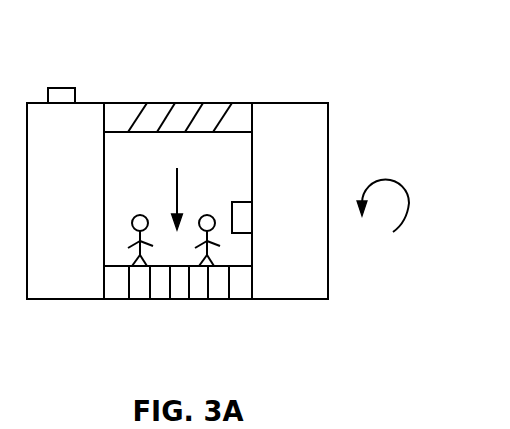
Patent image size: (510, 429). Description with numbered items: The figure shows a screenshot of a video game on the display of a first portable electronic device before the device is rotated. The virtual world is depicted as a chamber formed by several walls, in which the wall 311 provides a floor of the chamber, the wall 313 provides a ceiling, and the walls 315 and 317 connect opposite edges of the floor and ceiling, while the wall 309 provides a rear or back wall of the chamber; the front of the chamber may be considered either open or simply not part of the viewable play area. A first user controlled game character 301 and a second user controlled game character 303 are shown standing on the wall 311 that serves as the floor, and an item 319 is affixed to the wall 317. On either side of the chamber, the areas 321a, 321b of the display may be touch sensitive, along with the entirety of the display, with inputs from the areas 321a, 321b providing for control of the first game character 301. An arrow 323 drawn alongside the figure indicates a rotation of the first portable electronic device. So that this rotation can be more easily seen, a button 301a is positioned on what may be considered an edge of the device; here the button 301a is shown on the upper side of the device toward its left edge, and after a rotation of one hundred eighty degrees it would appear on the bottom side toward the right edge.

The first user controlled game character 301 is at (137, 248).
The button 301a is at (60, 88).
The second user controlled game character 303 is at (200, 247).
The wall 309 is at (178, 201).
The wall 311 is at (234, 268).
The wall 313 is at (235, 132).
The wall 315 is at (103, 240).
The wall 317 is at (253, 173).
The item 319 is at (243, 202).
The area of the display 321a is at (65, 201).
The area of the display 321b is at (290, 201).
The arrow 323 is at (407, 216).